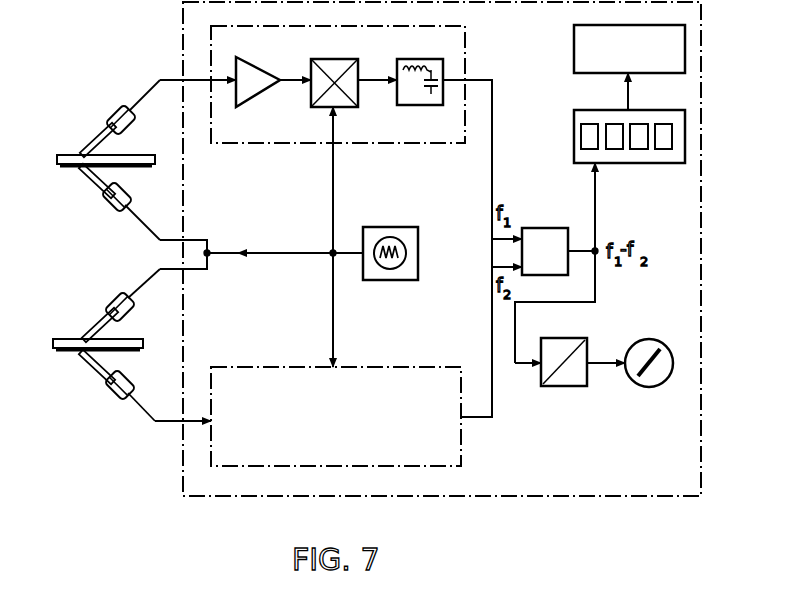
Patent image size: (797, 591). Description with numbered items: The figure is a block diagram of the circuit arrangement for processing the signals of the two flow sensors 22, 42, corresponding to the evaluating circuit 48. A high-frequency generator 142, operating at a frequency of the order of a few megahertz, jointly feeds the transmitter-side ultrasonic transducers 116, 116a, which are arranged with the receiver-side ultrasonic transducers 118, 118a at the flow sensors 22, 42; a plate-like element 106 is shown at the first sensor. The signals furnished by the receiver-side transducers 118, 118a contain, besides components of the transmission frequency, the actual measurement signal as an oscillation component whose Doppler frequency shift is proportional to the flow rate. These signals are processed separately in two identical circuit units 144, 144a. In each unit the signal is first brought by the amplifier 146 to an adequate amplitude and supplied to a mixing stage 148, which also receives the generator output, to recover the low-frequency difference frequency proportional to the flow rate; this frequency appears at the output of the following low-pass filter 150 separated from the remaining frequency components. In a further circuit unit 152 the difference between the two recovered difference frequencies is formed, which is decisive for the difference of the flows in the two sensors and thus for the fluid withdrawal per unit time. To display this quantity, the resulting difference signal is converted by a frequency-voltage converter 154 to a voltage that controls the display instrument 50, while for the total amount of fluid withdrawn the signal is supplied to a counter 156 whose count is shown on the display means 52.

The flow sensor 22 is at (75, 170).
The flow sensor 42 is at (73, 356).
The evaluating circuit 48 is at (585, 475).
The display instrument 50 is at (651, 386).
The display means 52 is at (574, 50).
The first plate 106 is at (68, 154).
The transmitter-side ultrasonic transducer 116 is at (112, 208).
The transmitter-side ultrasonic transducer 116a is at (117, 296).
The receiver-side ultrasonic transducer 118 is at (120, 107).
The receiver-side ultrasonic transducer 118a is at (114, 402).
The high-frequency generator 142 is at (406, 282).
The circuit unit 144 is at (276, 136).
The circuit unit 144a is at (280, 455).
The amplifier 146 is at (258, 70).
The mixing stage 148 is at (338, 62).
The low-pass filter 150 is at (418, 64).
The circuit unit 152 is at (544, 236).
The frequency-voltage converter 154 is at (561, 388).
The counter 156 is at (622, 156).